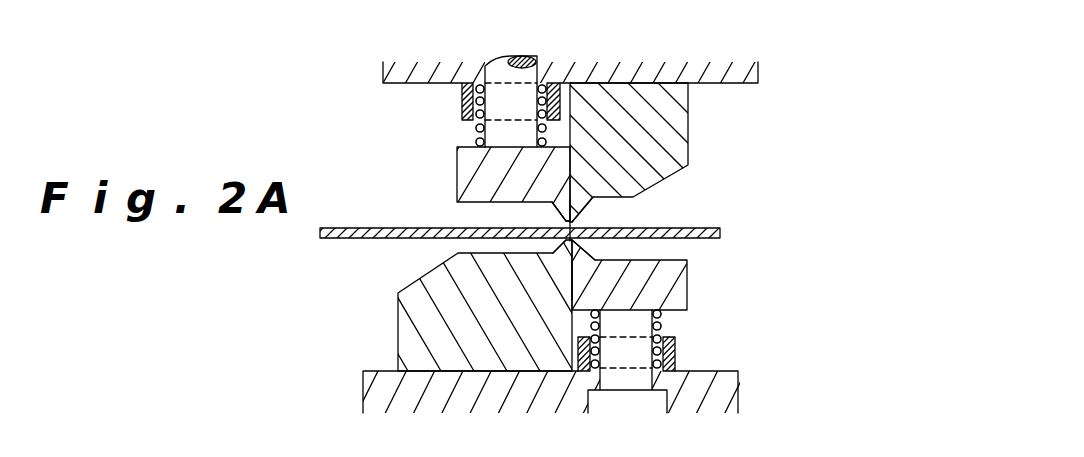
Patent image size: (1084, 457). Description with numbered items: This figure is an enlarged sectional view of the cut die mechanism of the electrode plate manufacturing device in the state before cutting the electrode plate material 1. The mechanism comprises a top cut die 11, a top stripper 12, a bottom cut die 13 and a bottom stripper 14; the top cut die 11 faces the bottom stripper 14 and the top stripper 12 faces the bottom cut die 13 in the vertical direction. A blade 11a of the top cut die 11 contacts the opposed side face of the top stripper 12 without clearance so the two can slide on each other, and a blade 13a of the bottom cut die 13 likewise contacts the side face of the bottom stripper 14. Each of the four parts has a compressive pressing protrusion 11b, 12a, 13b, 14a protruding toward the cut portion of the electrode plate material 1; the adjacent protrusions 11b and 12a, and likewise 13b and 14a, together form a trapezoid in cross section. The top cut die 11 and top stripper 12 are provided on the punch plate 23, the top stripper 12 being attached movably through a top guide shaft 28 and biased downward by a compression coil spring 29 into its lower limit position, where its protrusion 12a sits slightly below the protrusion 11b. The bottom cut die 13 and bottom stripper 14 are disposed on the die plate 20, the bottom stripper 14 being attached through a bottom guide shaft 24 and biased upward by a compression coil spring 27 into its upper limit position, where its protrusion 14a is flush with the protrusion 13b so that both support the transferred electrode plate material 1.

The electrode plate material 1 is at (716, 226).
The top cut die 11 is at (660, 150).
The blade 11a is at (560, 213).
The compressive pressing protrusion 11b is at (582, 198).
The top stripper 12 is at (507, 180).
The compressive pressing protrusion 12a is at (565, 221).
The bottom cut die 13 is at (483, 328).
The blade 13a is at (570, 280).
The compressive pressing protrusion 13b is at (566, 244).
The bottom stripper 14 is at (637, 281).
The compressive pressing protrusion 14a is at (583, 245).
The die plate 20 is at (708, 368).
The punch plate 23 is at (733, 75).
The bottom guide shaft 24 is at (628, 327).
The compression coil spring 27 is at (675, 350).
The top guide shaft 28 is at (512, 100).
The compression coil spring 29 is at (477, 127).